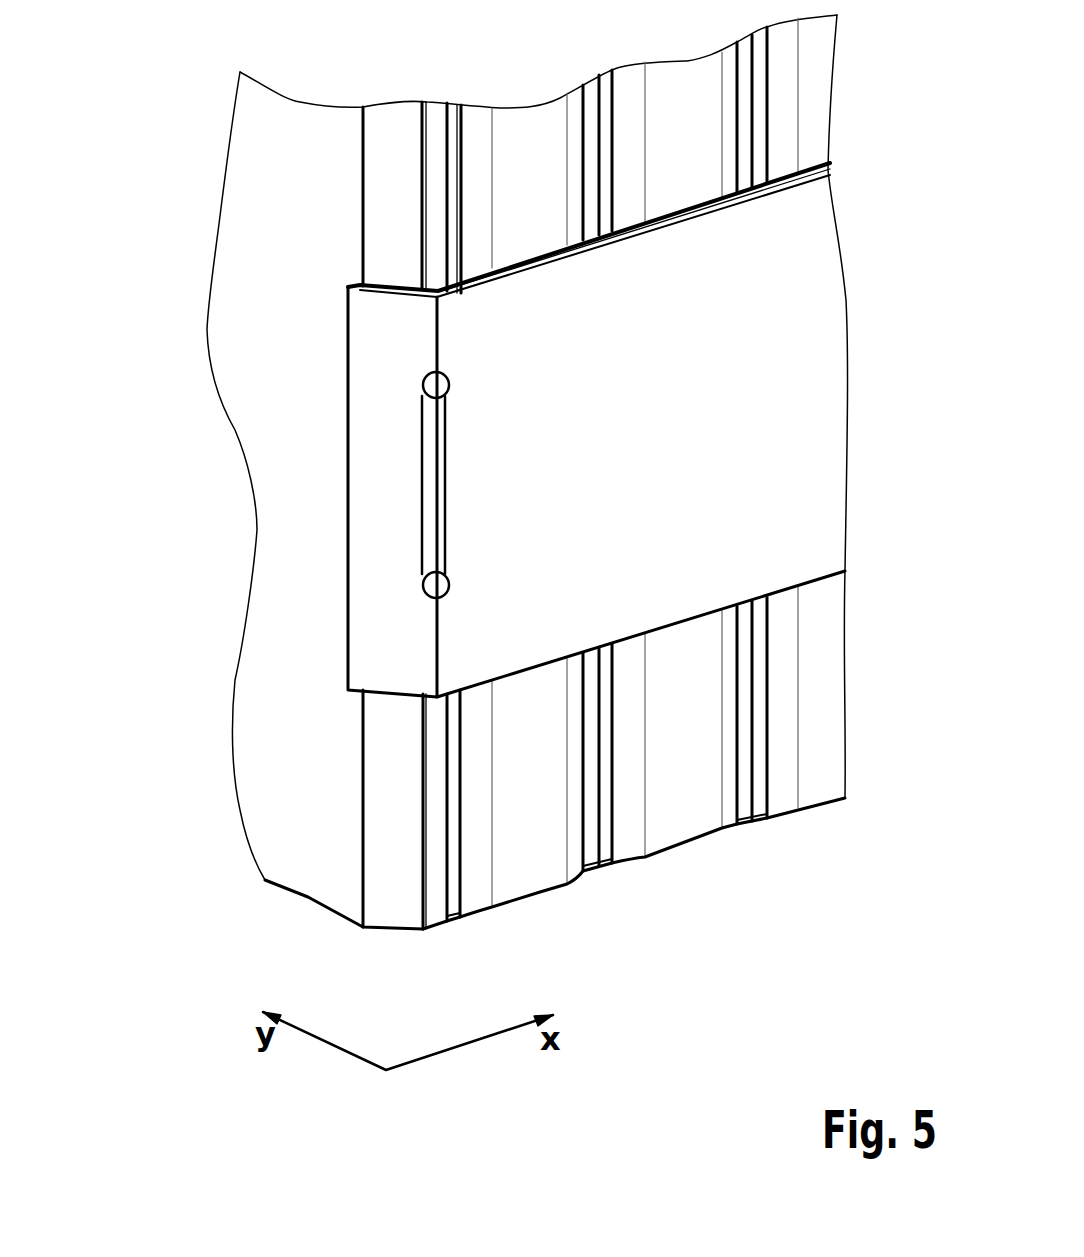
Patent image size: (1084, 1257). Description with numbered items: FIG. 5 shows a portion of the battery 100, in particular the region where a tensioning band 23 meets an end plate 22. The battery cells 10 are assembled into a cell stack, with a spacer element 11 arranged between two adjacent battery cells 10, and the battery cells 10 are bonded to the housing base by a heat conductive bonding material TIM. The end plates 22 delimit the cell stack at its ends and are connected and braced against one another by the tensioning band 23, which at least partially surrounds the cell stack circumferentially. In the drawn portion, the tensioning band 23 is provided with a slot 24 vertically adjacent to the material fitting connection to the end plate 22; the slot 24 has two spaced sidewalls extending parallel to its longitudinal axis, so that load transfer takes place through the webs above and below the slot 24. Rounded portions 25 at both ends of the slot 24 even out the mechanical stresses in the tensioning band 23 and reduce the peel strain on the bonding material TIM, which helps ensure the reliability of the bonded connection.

The battery 100 is at (175, 145).
The battery cells 10 is at (537, 882).
The spacer element 11 is at (453, 908).
The end plates 22 is at (310, 890).
The tensioning band 23 is at (817, 335).
The slot 24 is at (416, 478).
The rounded portions 25 is at (430, 387).
The heat conductive bonding material TIM is at (805, 168).